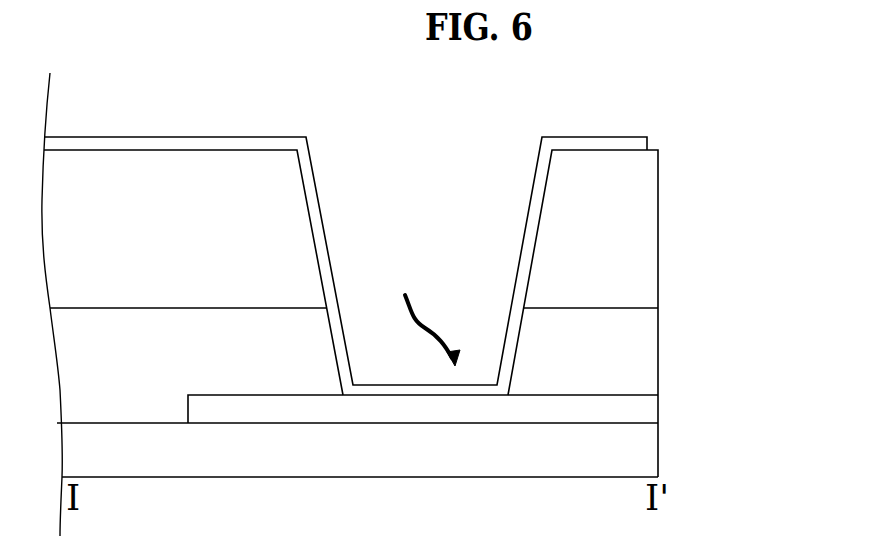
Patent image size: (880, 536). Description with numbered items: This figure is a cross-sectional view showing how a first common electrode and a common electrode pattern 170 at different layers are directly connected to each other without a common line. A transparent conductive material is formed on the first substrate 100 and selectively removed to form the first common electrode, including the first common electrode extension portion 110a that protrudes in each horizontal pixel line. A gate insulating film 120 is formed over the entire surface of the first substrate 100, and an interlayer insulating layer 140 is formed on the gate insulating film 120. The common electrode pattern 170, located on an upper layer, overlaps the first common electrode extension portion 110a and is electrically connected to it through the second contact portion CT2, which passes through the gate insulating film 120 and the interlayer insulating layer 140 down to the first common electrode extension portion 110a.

The first substrate 100 is at (636, 458).
The first common electrode extension portion 110a is at (636, 405).
The gate insulating film 120 is at (636, 345).
The interlayer insulating layer 140 is at (636, 273).
The common electrode pattern 170 is at (108, 143).
The second contact portion CT2 is at (421, 306).